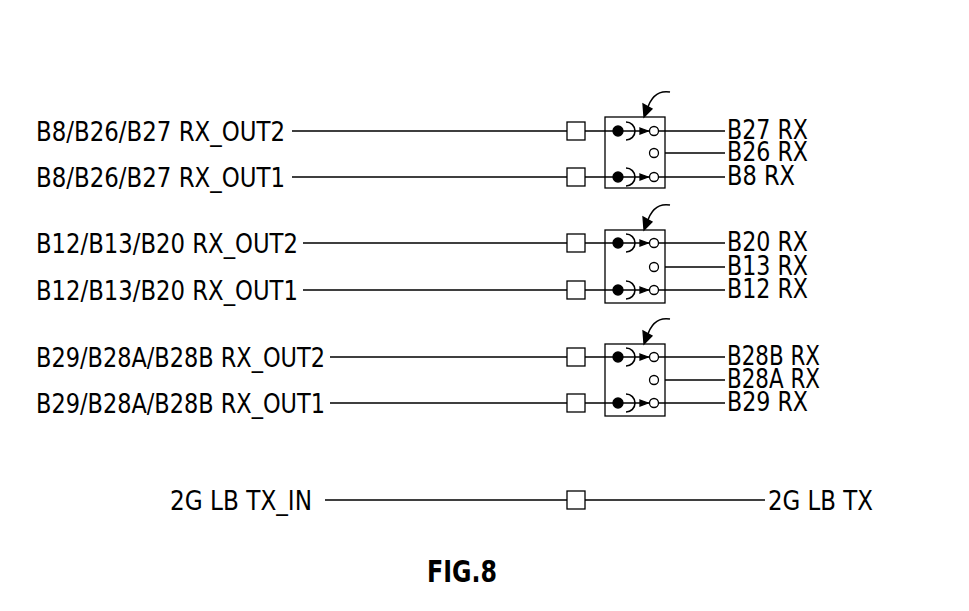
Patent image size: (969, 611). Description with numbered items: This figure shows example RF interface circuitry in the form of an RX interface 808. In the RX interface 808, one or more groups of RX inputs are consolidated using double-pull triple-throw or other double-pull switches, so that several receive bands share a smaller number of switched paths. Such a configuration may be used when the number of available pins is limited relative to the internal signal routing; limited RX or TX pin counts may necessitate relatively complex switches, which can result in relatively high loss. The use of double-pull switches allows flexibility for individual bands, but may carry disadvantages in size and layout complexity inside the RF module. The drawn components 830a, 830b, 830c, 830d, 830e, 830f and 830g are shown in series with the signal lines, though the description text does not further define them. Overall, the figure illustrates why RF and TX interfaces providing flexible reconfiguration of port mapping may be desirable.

The RX interface 808 is at (592, 72).
The filter 830a is at (570, 491).
The filter 830b is at (570, 394).
The filter 830c is at (570, 348).
The filter 830d is at (570, 281).
The filter 830e is at (570, 234).
The filter 830f is at (570, 168).
The filter 830g is at (570, 122).